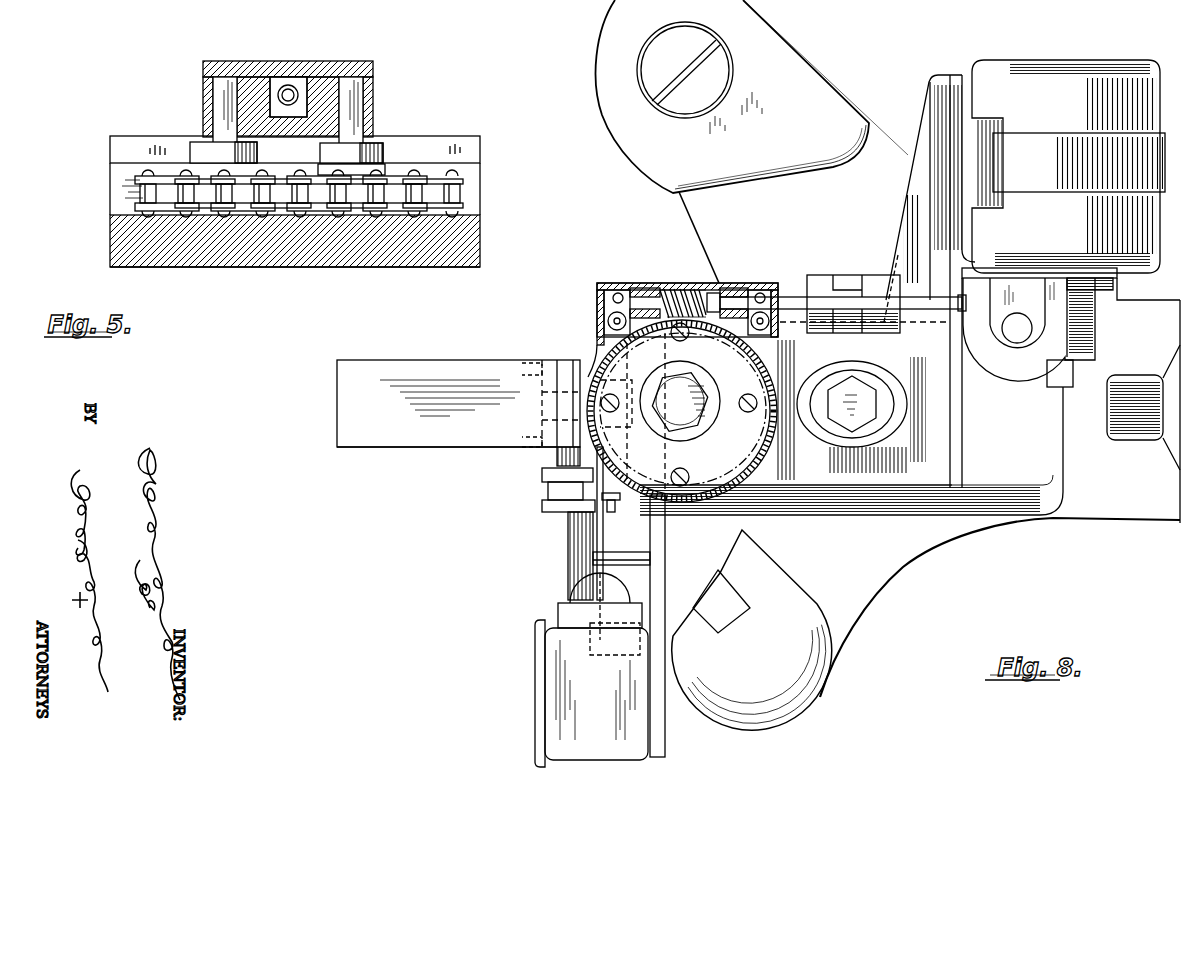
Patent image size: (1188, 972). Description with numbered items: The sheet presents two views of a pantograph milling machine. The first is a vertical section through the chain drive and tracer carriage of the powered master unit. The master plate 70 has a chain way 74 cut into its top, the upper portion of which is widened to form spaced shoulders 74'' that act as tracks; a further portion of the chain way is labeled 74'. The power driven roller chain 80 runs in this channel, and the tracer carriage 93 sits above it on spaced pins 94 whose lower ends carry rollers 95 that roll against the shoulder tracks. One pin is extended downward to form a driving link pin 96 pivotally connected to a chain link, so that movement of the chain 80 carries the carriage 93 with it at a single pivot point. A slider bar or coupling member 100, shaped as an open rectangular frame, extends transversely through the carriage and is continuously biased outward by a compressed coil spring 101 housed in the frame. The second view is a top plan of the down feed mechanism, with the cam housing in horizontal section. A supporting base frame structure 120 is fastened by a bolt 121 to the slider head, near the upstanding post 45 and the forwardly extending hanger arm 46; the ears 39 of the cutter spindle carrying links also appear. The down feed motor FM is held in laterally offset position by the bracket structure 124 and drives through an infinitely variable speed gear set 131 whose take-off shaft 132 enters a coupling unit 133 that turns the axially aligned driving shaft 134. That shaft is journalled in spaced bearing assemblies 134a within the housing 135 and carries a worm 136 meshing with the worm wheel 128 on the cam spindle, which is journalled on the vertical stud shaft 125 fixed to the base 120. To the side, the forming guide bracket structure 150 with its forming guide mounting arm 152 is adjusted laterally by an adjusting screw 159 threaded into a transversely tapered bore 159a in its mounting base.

In FIG. 8, the ears 39 is at (661, 58).
In FIG. 8, the post 45 is at (848, 620).
In FIG. 8, the hanger arm 46 is at (778, 578).
In FIG. 5, the master plate 70 is at (207, 270).
In FIG. 5, the chain way 74 is at (267, 206).
In FIG. 5, the lower rail plate 74' is at (322, 239).
In FIG. 5, the shoulders 74'' is at (310, 130).
In FIG. 5, the roller chain 80 is at (455, 182).
In FIG. 5, the tracer carriage 93 is at (294, 56).
In FIG. 5, the pins 94 is at (218, 100).
In FIG. 5, the rollers 95 is at (205, 152).
In FIG. 5, the driving link pin 96 is at (365, 168).
In FIG. 5, the slider bar 100 is at (320, 83).
In FIG. 5, the biasing spring 101 is at (298, 89).
In FIG. 8, the supporting frame structure 120 is at (846, 478).
In FIG. 8, the bolt 121 is at (860, 395).
In FIG. 8, the bracket structure 124 is at (913, 130).
In FIG. 8, the stud shaft 125 is at (695, 415).
In FIG. 8, the worm wheel 128 is at (760, 368).
In FIG. 8, the variable speed gear set 131 is at (1024, 368).
In FIG. 8, the take-off shaft 132 is at (930, 309).
In FIG. 8, the coupling unit 133 is at (866, 276).
In FIG. 8, the driving shaft 134 is at (795, 297).
In FIG. 8, the bearing assemblies 134a is at (640, 283).
In FIG. 8, the housing 135 is at (604, 286).
In FIG. 8, the worm 136 is at (684, 290).
In FIG. 8, the forming guide bracket structure 150 is at (438, 374).
In FIG. 8, the forming guide mounting arm 152 is at (378, 434).
In FIG. 8, the adjusting screw 159 is at (557, 456).
In FIG. 8, the tapered bore 159a is at (542, 425).
In FIG. 8, the down feed motor FM is at (1038, 56).